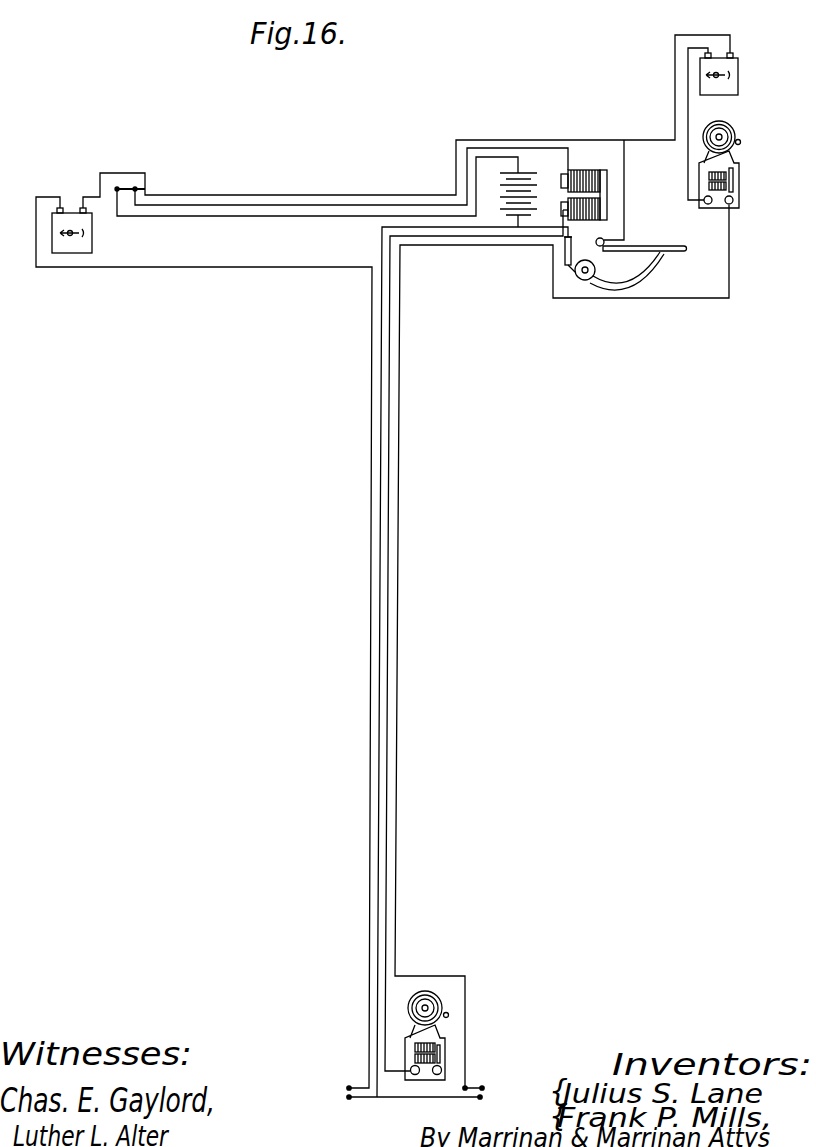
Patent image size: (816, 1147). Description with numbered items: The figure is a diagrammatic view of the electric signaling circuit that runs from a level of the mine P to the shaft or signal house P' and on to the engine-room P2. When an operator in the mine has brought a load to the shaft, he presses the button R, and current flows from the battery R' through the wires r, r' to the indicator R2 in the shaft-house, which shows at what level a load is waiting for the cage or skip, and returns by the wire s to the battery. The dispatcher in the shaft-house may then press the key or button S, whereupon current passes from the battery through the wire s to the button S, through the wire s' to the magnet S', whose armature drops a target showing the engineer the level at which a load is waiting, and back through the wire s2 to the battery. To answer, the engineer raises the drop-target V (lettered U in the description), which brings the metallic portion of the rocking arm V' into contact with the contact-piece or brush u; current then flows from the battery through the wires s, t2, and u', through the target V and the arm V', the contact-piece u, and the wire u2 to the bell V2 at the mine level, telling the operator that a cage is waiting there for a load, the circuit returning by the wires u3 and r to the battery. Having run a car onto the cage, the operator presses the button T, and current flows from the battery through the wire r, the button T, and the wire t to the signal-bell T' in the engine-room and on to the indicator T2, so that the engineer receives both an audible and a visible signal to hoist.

The shaft or signal house P' is at (35, 143).
The indicator R2 is at (77, 243).
The wire r' is at (204, 642).
The wire t2 is at (100, 181).
The key or button S is at (130, 165).
The wire s is at (317, 199).
The wire s' is at (351, 176).
The battery R' is at (528, 189).
The magnet S' is at (584, 179).
The wire s2 is at (543, 223).
The wire u' is at (625, 193).
The drop-target V is at (638, 255).
The contact-piece u is at (549, 256).
The rocking arm V' is at (593, 293).
The wire r is at (448, 662).
The wire u2 is at (398, 633).
The wire t is at (688, 113).
The indicator T2 is at (738, 70).
The engine-room P2 is at (790, 145).
The signal-bell T' is at (737, 179).
The bell V2 is at (438, 1040).
The wire u3 is at (437, 1075).
The button R is at (327, 1076).
The button T is at (482, 1074).
The level of a mine P is at (400, 1111).